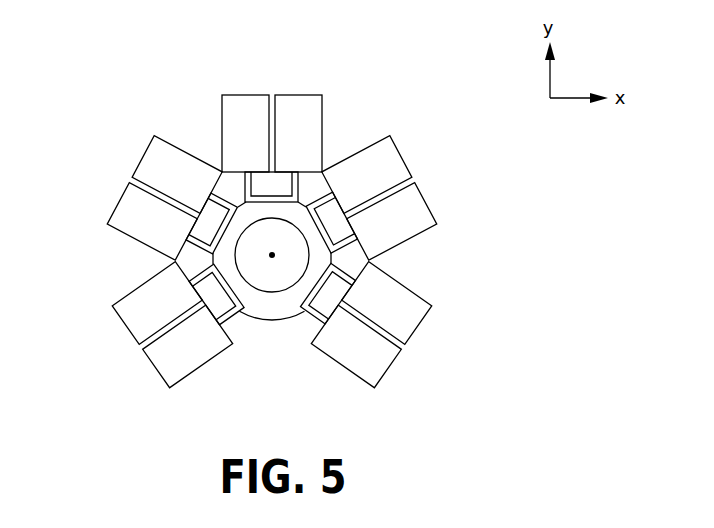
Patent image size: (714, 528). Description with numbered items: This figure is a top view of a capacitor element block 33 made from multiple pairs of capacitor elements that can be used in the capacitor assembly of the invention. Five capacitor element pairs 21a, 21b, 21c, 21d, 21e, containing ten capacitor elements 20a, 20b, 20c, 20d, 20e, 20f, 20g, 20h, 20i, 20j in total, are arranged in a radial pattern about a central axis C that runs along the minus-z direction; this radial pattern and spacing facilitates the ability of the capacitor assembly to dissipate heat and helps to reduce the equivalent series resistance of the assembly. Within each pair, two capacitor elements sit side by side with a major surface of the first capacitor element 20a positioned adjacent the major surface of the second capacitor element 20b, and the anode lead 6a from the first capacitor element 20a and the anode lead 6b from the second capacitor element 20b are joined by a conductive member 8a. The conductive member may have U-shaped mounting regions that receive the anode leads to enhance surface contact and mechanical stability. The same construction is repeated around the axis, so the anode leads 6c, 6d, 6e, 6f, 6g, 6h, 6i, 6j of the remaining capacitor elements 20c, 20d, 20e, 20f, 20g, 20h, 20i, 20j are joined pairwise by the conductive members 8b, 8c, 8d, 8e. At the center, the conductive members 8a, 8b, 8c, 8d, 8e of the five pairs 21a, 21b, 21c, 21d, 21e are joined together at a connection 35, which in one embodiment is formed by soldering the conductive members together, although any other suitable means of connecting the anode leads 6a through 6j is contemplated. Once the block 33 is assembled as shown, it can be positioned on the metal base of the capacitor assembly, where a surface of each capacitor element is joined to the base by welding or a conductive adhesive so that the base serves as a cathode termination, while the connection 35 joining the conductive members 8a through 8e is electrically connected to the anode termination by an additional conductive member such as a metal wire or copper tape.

The capacitor element block 33 is at (138, 90).
The capacitor element pair 21a is at (270, 70).
The capacitor element pair 21b is at (438, 167).
The capacitor element pair 21c is at (428, 352).
The capacitor element pair 21d is at (117, 355).
The capacitor element pair 21e is at (104, 164).
The first capacitor element 20a is at (261, 129).
The second capacitor element 20b is at (314, 129).
The capacitor element 20c is at (368, 180).
The capacitor element 20d is at (396, 225).
The capacitor element 20e is at (416, 325).
The capacitor element 20f is at (357, 370).
The capacitor element 20g is at (162, 370).
The capacitor element 20h is at (160, 325).
The capacitor element 20i is at (119, 228).
The capacitor element 20j is at (143, 182).
The anode lead 6a is at (252, 178).
The anode lead 6b is at (302, 178).
The anode lead 6c is at (332, 187).
The anode lead 6d is at (357, 233).
The anode lead 6e is at (358, 282).
The anode lead 6f is at (313, 327).
The anode lead 6g is at (231, 316).
The anode lead 6h is at (189, 279).
The anode lead 6i is at (185, 254).
The anode lead 6j is at (217, 194).
The conductive member 8a is at (275, 185).
The conductive member 8b is at (331, 222).
The conductive member 8c is at (328, 293).
The conductive member 8d is at (216, 294).
The conductive member 8e is at (211, 223).
The connection 35 is at (272, 261).
The central axis C is at (272, 251).